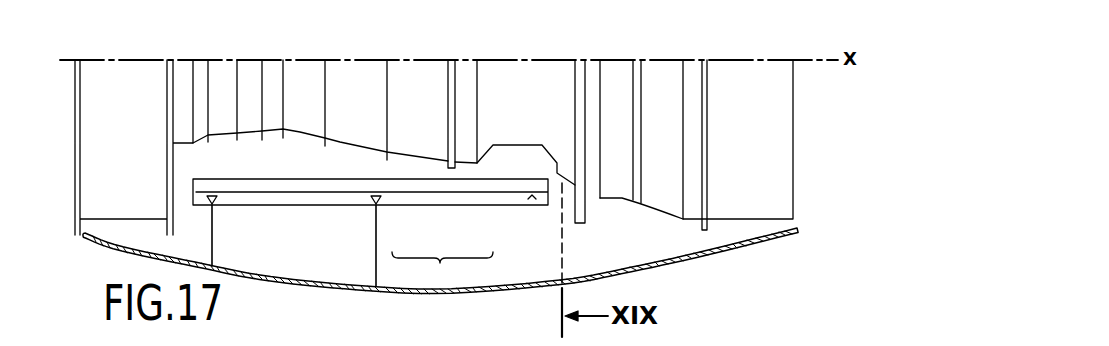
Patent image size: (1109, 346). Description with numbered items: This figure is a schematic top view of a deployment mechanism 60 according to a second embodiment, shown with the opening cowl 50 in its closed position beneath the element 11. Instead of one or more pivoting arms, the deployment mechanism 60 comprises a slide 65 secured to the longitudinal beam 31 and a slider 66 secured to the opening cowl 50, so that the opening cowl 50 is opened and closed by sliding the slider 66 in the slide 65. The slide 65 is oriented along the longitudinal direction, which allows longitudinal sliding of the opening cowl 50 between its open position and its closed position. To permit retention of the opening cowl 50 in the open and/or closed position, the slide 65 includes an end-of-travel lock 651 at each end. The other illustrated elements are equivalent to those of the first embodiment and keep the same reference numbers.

The turbomachine 11 is at (520, 78).
The longitudinal beam 31 is at (311, 205).
The opening cowl 50 is at (700, 253).
The deployment mechanism 60 is at (440, 263).
The slide 65 is at (470, 201).
The slider 66 is at (392, 205).
The end-of-travel lock 651 is at (222, 204).